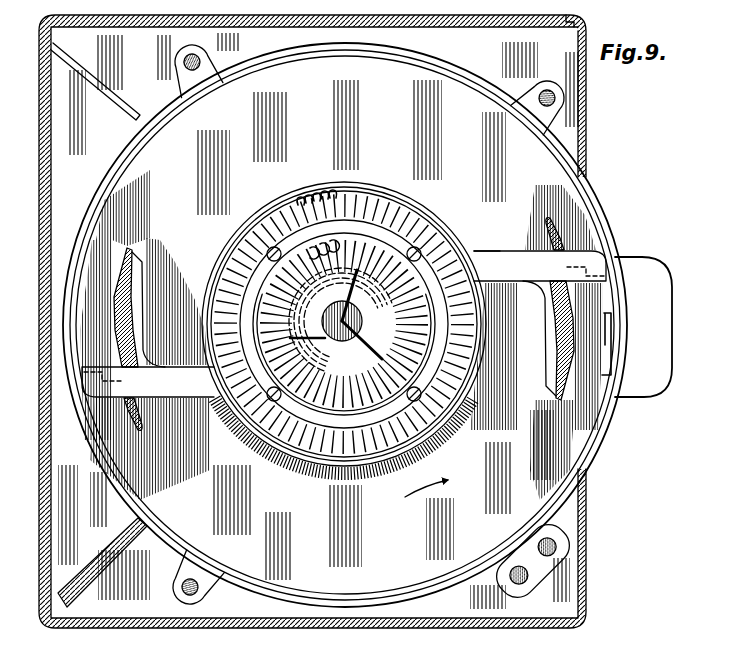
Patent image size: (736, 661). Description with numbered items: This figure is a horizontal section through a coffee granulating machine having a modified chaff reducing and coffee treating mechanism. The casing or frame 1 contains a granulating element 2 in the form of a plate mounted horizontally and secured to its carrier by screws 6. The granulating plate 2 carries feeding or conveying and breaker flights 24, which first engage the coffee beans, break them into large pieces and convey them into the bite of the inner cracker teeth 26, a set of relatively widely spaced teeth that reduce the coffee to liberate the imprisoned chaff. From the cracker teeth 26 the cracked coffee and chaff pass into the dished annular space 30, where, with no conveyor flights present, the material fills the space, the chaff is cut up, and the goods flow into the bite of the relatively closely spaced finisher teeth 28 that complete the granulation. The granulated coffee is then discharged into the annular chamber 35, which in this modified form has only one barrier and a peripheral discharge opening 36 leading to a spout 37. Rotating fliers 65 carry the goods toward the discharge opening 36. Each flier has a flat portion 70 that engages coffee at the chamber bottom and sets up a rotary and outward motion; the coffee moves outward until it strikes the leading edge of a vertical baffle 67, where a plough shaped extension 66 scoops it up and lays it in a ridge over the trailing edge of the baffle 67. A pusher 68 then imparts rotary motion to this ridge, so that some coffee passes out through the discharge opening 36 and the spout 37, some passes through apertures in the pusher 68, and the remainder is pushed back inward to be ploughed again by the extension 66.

The casing or frame 1 is at (246, 629).
The granulating element 2 is at (246, 428).
The screws 6 is at (276, 250).
The feeding or conveying and breaker flights 24 is at (351, 292).
The cracker teeth 26 is at (369, 322).
The finisher teeth 28 is at (394, 206).
The dished annular space 30 is at (350, 425).
The annular chamber 35 is at (342, 321).
The peripheral discharge opening 36 is at (612, 325).
The spout 37 is at (658, 357).
The fliers 65 is at (480, 246).
The plough shaped extension 66 is at (132, 257).
The vertical baffle 67 is at (140, 427).
The pusher 68 is at (82, 367).
The flat portion 70 is at (518, 252).